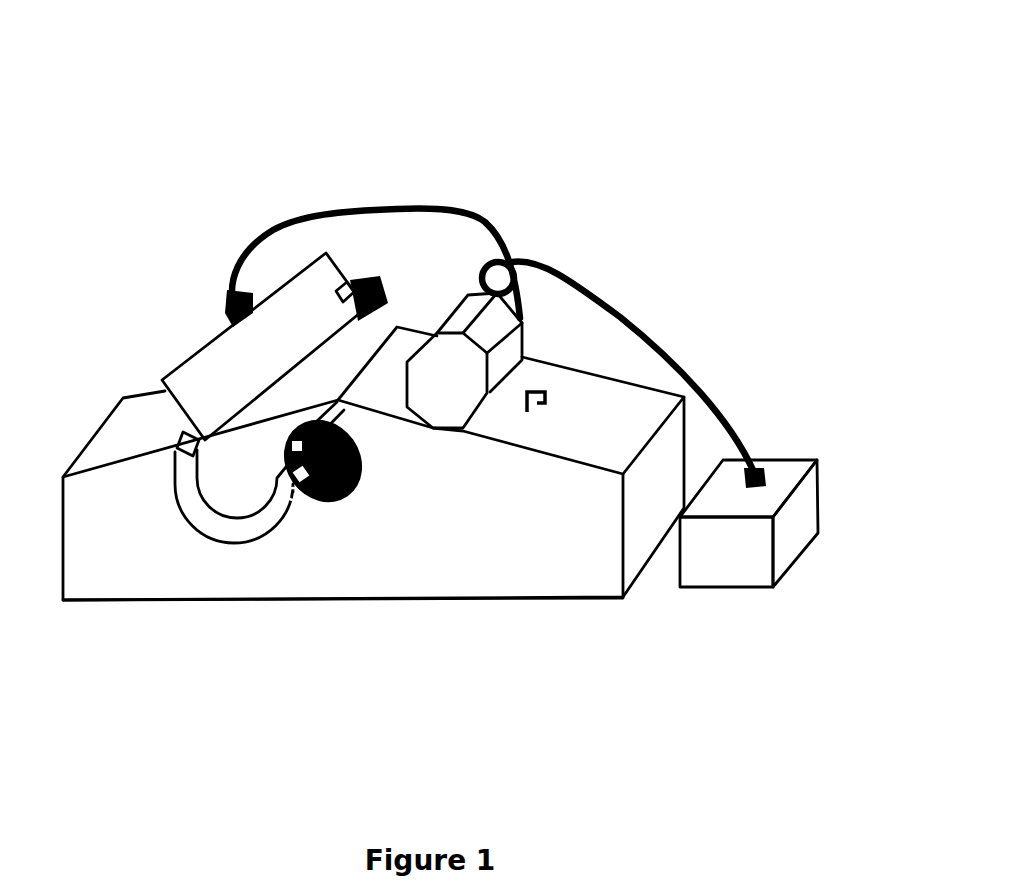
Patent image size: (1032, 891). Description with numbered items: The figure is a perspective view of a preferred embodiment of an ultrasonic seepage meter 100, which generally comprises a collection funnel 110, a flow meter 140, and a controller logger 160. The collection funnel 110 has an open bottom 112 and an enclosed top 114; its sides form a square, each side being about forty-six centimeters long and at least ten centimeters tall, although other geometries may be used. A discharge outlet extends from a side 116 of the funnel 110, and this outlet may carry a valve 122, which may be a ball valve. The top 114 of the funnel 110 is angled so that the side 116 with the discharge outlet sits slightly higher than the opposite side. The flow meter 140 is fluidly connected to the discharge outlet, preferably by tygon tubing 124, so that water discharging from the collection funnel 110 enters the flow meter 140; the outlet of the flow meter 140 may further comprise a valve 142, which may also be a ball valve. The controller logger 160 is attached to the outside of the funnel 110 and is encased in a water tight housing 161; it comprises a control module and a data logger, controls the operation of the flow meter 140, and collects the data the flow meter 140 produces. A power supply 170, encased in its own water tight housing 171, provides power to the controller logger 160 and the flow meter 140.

The ultrasonic seepage meter 100 is at (479, 371).
The collection funnel 110 is at (112, 364).
The open bottom 112 is at (343, 669).
The enclosed top 114 is at (418, 289).
The side 116 is at (373, 515).
The valve 122 is at (359, 554).
The tygon tubing 124 is at (193, 571).
The flow meter 140 is at (258, 268).
The valve 142 is at (381, 204).
The controller logger 160 is at (547, 267).
The water tight housing 161 is at (452, 160).
The power supply 170 is at (705, 477).
The water tight housing 171 is at (813, 576).